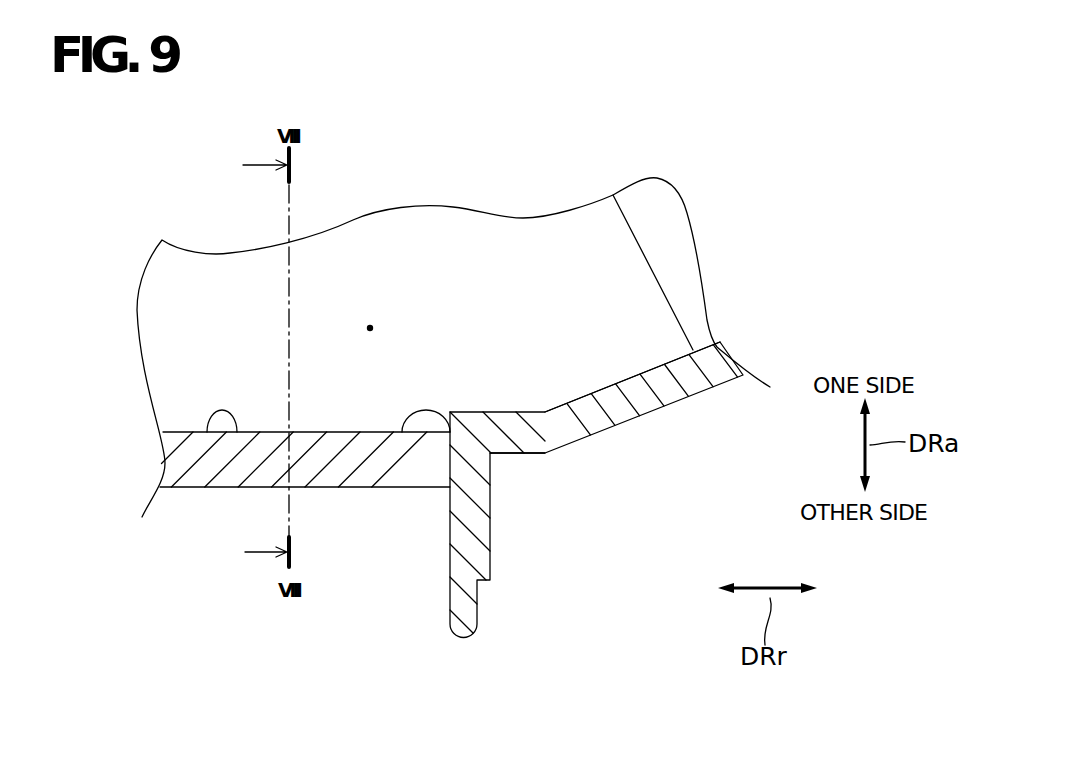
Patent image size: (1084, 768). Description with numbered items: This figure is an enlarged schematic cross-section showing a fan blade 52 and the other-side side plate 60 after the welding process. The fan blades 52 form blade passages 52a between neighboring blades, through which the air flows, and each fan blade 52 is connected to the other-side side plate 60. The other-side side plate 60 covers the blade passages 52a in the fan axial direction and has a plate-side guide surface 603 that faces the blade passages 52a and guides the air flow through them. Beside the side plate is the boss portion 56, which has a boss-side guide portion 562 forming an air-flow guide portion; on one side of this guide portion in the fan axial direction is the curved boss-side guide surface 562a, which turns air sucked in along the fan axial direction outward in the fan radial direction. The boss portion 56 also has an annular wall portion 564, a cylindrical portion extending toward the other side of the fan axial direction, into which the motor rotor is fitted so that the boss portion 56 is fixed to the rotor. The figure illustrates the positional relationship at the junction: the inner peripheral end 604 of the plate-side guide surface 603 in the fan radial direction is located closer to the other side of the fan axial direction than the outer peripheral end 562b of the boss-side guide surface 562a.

The fan blade 52 is at (218, 317).
The blade passage 52a is at (370, 328).
The boss portion 56 is at (636, 433).
The boss-side guide portion 562 is at (650, 395).
The boss-side guide surface 562a is at (632, 377).
The outer peripheral end of the boss-side guide surface 562b is at (450, 412).
The annular wall portion 564 is at (483, 527).
The other-side side plate 60 is at (170, 460).
The plate-side guide surface 603 is at (207, 432).
The inner peripheral end of the plate-side guide surface 604 is at (403, 437).